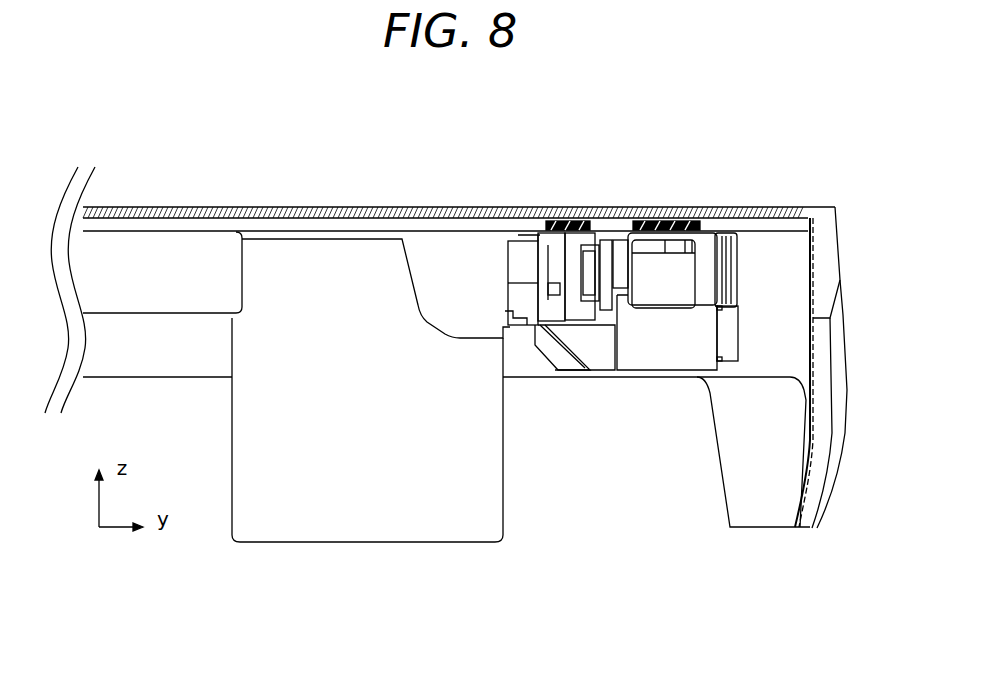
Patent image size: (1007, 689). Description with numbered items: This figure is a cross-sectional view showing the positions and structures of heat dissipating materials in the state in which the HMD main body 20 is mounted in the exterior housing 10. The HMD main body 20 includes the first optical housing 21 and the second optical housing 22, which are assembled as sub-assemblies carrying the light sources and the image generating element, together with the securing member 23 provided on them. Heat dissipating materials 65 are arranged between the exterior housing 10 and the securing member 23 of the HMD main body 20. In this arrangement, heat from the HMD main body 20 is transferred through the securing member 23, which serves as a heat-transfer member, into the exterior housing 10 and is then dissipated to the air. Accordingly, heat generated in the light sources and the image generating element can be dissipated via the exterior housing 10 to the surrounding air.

The exterior housing 10 is at (518, 207).
The HMD main body 20 is at (563, 416).
The first optical housing 21 is at (675, 341).
The second optical housing 22 is at (436, 250).
The securing member 23 is at (723, 228).
The heat dissipating materials 65 is at (570, 227).